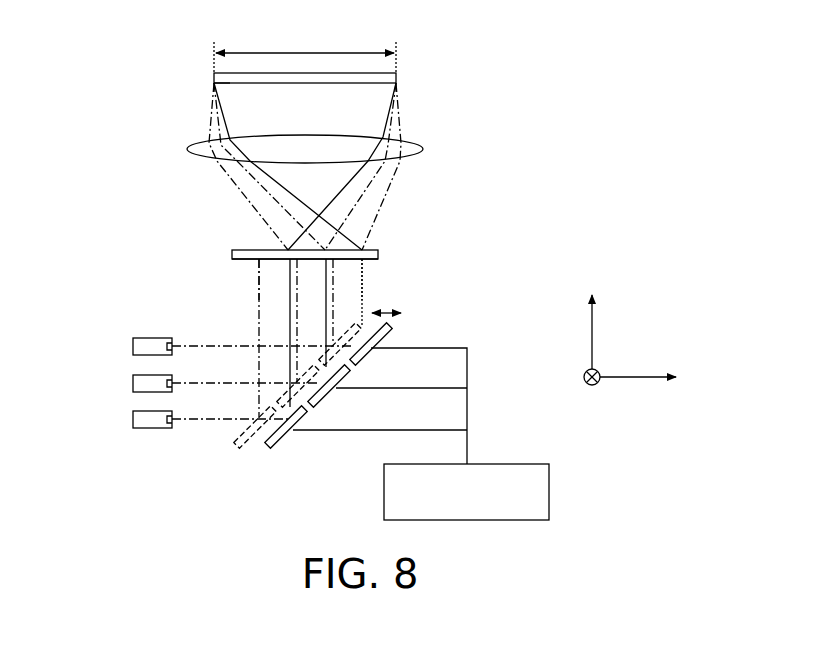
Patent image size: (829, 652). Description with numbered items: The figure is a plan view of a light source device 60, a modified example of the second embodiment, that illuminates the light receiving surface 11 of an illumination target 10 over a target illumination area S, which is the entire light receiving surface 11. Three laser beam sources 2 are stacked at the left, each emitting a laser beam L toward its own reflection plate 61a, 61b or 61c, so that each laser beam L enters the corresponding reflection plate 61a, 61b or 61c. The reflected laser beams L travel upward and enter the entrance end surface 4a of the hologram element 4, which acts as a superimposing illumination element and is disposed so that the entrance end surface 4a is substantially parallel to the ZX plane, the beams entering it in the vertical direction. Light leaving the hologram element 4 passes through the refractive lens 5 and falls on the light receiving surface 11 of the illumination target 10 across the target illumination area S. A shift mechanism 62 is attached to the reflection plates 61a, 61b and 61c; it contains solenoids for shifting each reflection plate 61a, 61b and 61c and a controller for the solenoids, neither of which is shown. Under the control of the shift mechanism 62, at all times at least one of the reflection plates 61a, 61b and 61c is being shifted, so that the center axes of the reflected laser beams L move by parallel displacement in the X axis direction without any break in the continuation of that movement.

The light source device 60 is at (586, 147).
The illumination target 10 is at (396, 78).
The light receiving surface 11 is at (213, 99).
The refractive lens 5 is at (423, 148).
The hologram element 4 is at (378, 255).
The entrance end surface 4a is at (242, 263).
The laser beam source 2 is at (133, 346).
The reflection plate 61a is at (392, 336).
The reflection plate 61b is at (351, 378).
The reflection plate 61c is at (310, 417).
The shift mechanism 62 is at (549, 492).
The laser beam L is at (207, 346).
The target illumination area S is at (305, 51).